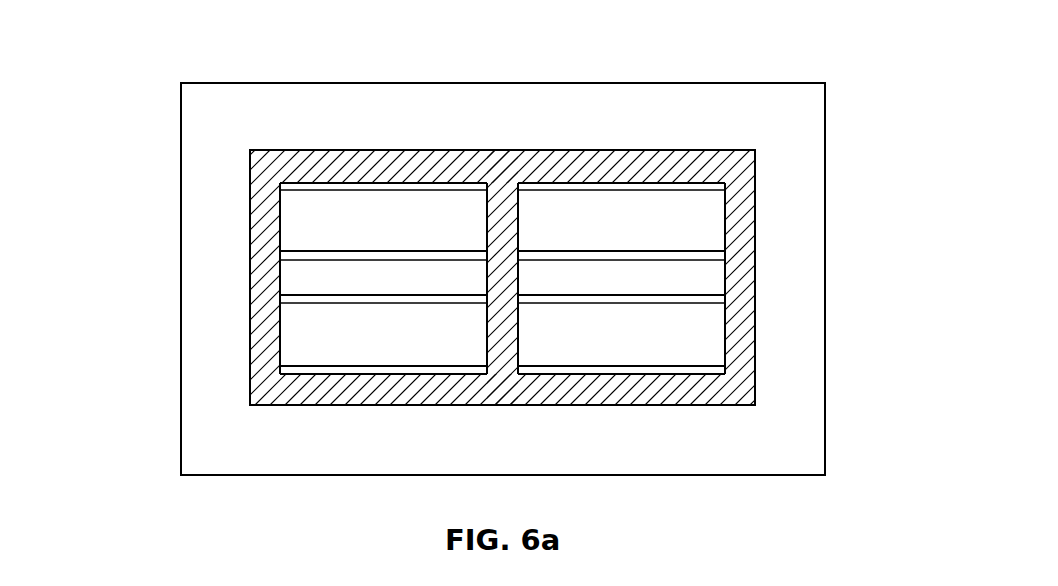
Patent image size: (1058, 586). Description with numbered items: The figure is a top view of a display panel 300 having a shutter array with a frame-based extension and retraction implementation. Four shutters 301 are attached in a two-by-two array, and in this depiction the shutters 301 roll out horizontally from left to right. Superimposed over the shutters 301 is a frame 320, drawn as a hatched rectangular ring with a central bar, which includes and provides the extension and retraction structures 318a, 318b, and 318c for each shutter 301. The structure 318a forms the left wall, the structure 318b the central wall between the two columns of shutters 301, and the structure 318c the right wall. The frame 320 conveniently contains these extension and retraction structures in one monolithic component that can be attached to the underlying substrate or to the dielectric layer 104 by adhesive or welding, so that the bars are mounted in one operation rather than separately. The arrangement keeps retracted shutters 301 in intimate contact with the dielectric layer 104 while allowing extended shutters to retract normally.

The display panel 300 is at (861, 57).
The dielectric layer 104 is at (800, 375).
The frame 320 is at (757, 250).
The extension and retraction structure 318a is at (263, 201).
The extension and retraction structure 318b is at (503, 210).
The extension and retraction structure 318c is at (735, 165).
The shutter 301 is at (502, 278).